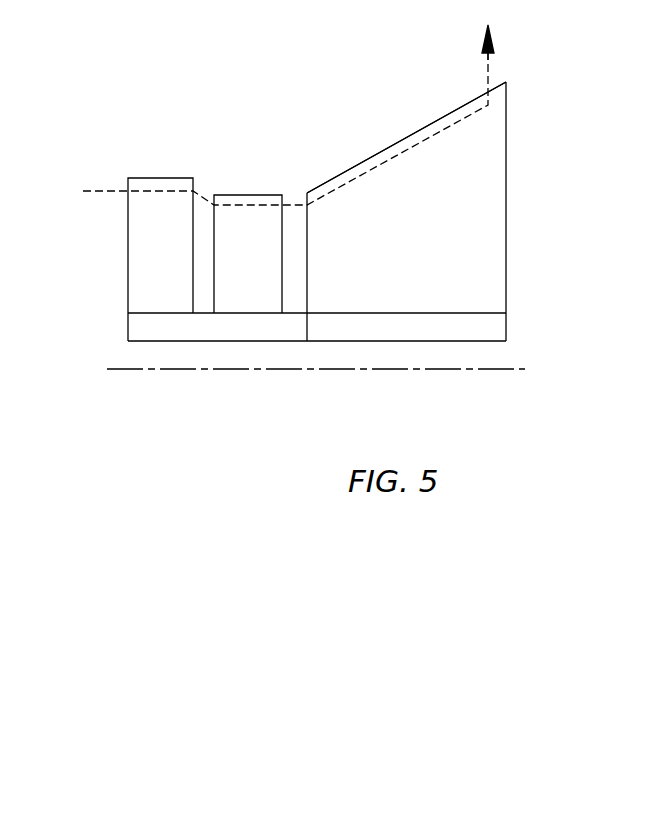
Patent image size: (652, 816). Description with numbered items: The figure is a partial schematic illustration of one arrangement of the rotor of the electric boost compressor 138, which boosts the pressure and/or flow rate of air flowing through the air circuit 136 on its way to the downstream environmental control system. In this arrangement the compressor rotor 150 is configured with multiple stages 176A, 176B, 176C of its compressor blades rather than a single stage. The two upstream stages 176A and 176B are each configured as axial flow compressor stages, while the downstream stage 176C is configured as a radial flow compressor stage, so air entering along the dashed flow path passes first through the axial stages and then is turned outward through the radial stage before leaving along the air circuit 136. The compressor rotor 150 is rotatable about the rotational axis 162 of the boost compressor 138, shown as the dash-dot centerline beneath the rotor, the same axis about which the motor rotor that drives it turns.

The electric boost compressor 138 is at (84, 110).
The upstream compressor blade stage 176A is at (170, 170).
The upstream compressor blade stage 176B is at (250, 190).
The downstream compressor blade stage 176C is at (389, 132).
The air circuit 136 is at (490, 67).
The compressor rotor 150 is at (520, 268).
The rotational axis 162 is at (510, 371).